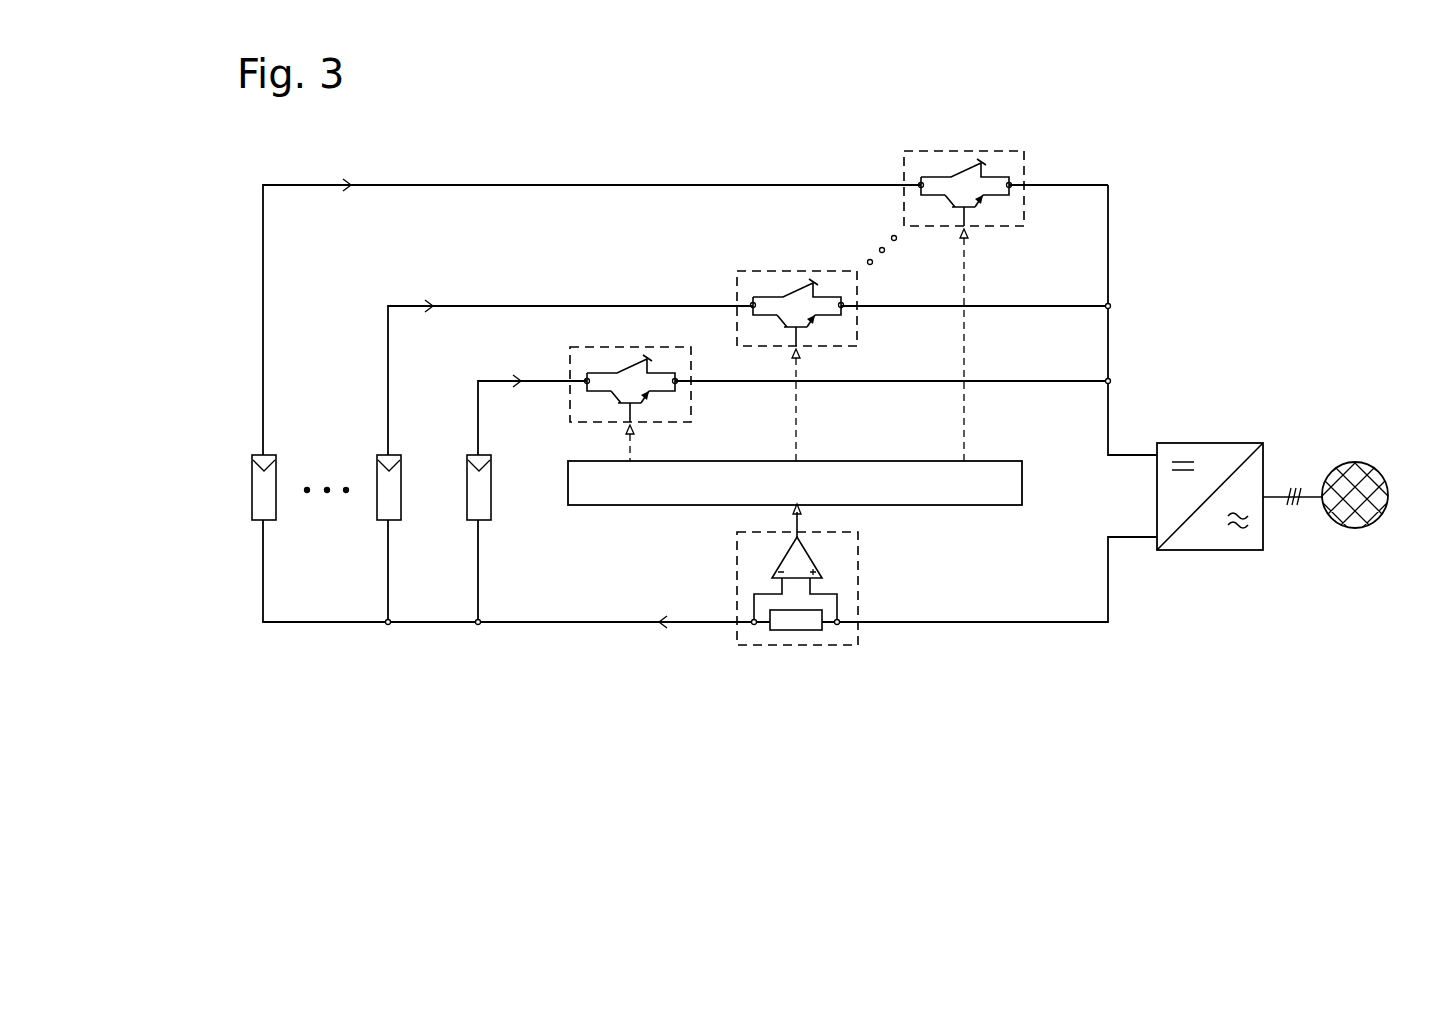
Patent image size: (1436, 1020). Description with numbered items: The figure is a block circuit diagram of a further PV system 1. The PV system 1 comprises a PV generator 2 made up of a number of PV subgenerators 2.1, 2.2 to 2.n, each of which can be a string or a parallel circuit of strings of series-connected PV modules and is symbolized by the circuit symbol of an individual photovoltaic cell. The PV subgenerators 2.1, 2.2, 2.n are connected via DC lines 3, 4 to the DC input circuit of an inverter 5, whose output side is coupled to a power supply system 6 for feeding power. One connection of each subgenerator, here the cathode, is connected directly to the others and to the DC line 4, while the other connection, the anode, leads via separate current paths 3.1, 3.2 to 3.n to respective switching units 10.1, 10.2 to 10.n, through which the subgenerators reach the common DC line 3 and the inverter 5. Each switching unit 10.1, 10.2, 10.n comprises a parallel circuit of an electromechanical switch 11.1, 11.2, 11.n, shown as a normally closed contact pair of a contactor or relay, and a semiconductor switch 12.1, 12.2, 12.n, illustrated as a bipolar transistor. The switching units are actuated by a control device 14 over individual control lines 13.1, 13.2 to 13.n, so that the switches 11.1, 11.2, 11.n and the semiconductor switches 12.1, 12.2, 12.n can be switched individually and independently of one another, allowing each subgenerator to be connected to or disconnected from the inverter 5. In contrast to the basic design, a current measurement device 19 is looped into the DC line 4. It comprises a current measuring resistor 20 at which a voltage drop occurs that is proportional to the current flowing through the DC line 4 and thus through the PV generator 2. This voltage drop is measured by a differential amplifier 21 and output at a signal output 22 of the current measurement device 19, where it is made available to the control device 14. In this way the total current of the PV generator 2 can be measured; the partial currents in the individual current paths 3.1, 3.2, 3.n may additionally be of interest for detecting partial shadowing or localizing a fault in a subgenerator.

The PV system 1 is at (1176, 129).
The PV generator 2 is at (240, 383).
The PV subgenerator 2.1 is at (467, 500).
The PV subgenerator 2.2 is at (377, 500).
The PV subgenerator 2.n is at (252, 507).
The DC line 3 is at (1108, 337).
The current path 3.1 is at (545, 381).
The current path 3.2 is at (525, 306).
The current path 3.n is at (583, 185).
The DC line 4 is at (527, 623).
The inverter 5 is at (1201, 443).
The power supply system 6 is at (1350, 528).
The switching unit 10.1 is at (632, 364).
The switching unit 10.2 is at (844, 281).
The switching unit 10.n is at (1002, 270).
The electromechanical switch 11.1 is at (631, 315).
The electromechanical switch 11.2 is at (797, 208).
The electromechanical switch 11.n is at (958, 137).
The semiconductor switch 12.1 is at (684, 406).
The semiconductor switch 12.2 is at (837, 346).
The semiconductor switch 12.n is at (1012, 231).
The control line 13.1 is at (632, 452).
The control line 13.2 is at (798, 436).
The control line 13.n is at (966, 425).
The control device 14 is at (654, 506).
The current measurement device 19 is at (838, 600).
The current measuring resistor 20 is at (800, 632).
The differential amplifier 21 is at (818, 566).
The signal output 22 is at (800, 523).